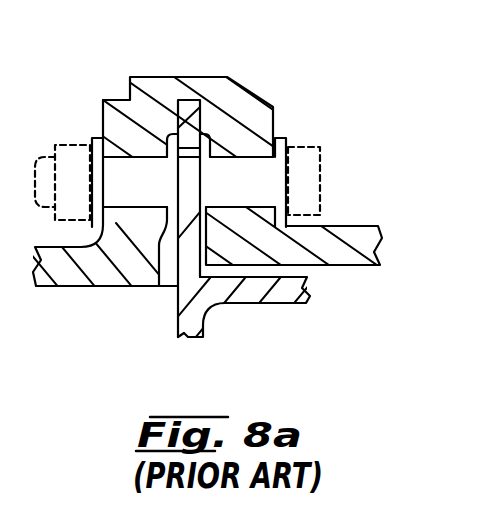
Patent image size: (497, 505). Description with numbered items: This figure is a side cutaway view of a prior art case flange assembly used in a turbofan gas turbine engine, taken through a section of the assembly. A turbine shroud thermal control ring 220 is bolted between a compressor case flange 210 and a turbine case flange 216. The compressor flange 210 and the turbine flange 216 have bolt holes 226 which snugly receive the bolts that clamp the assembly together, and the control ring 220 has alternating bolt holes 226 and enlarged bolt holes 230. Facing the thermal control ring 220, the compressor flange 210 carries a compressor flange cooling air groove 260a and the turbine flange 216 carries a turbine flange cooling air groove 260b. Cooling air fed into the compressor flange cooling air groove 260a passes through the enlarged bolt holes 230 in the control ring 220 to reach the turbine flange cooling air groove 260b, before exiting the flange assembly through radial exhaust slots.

The compressor case flange 210 is at (167, 297).
The turbine case flange 216 is at (253, 103).
The turbine shroud thermal control ring 220 is at (167, 132).
The bolt holes 226 is at (122, 160).
The enlarged bolt holes 230 is at (221, 156).
The compressor flange cooling air groove 260a is at (161, 265).
The turbine flange cooling air groove 260b is at (208, 206).